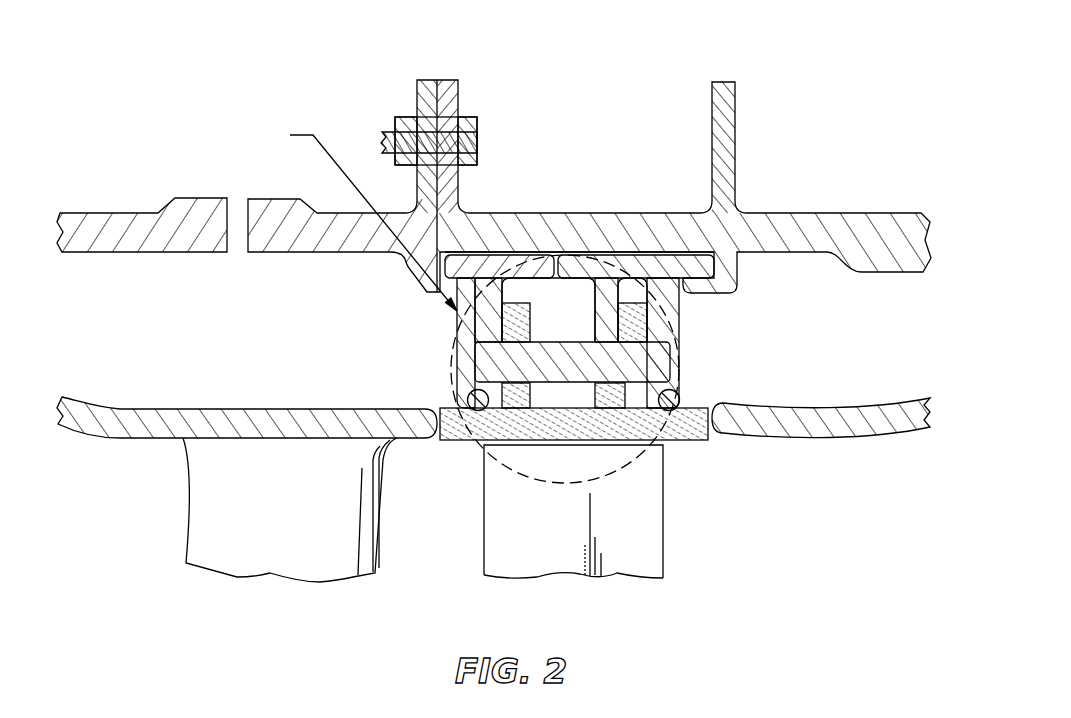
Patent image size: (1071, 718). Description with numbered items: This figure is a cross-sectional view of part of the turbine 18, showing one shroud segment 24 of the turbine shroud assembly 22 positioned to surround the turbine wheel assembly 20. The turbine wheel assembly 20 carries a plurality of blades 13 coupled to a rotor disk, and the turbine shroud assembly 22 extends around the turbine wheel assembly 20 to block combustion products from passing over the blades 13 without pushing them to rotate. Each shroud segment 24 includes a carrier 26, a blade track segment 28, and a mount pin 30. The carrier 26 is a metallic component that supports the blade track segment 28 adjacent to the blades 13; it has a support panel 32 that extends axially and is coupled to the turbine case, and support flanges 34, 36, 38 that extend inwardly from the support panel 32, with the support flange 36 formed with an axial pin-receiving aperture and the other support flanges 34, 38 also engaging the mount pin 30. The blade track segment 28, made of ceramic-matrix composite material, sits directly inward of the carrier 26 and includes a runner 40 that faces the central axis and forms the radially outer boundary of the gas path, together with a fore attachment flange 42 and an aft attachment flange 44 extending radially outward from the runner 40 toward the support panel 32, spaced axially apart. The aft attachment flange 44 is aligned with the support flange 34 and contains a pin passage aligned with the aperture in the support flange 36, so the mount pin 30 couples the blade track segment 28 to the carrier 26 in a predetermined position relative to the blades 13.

The blades 13 is at (672, 551).
The turbine 18 is at (135, 138).
The turbine wheel assembly 20 is at (726, 503).
The turbine shroud assembly 22 is at (752, 250).
The shroud segment 24 is at (742, 360).
The carrier 26 is at (611, 232).
The blade track segment 28 is at (644, 458).
The mount pin 30 is at (597, 326).
The support panel 32 is at (584, 243).
The support flange 34 is at (507, 295).
The support flange 36 is at (628, 282).
The support flange 38 is at (586, 309).
The runner 40 is at (603, 396).
The fore attachment flange 42 is at (541, 396).
The aft attachment flange 44 is at (594, 383).